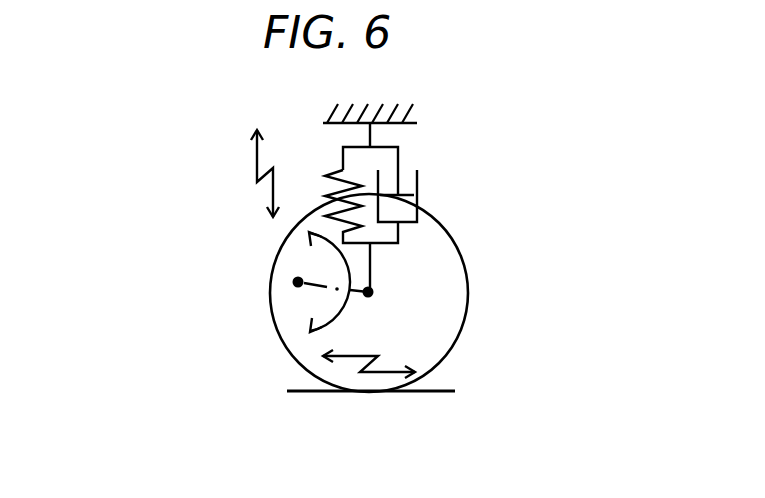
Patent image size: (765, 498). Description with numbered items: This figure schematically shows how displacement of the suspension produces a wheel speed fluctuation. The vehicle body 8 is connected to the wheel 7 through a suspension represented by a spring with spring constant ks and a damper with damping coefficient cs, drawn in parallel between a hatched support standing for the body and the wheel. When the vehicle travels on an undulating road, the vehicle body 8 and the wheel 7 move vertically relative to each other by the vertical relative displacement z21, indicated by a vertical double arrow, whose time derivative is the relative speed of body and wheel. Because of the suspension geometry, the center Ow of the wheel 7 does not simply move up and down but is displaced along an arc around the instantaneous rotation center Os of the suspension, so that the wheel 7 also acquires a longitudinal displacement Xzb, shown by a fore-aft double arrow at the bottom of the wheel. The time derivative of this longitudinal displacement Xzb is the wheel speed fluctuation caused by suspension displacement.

The wheel 7 is at (469, 283).
The vehicle body 8 is at (415, 118).
The suspension spring constant ks is at (332, 171).
The suspension damping coefficient cs is at (418, 180).
The instantaneous rotation center of the suspension Os is at (296, 282).
The center of the wheel Ow is at (373, 292).
The vertical relative displacement z21 is at (255, 163).
The longitudinal displacement Xzb is at (383, 368).